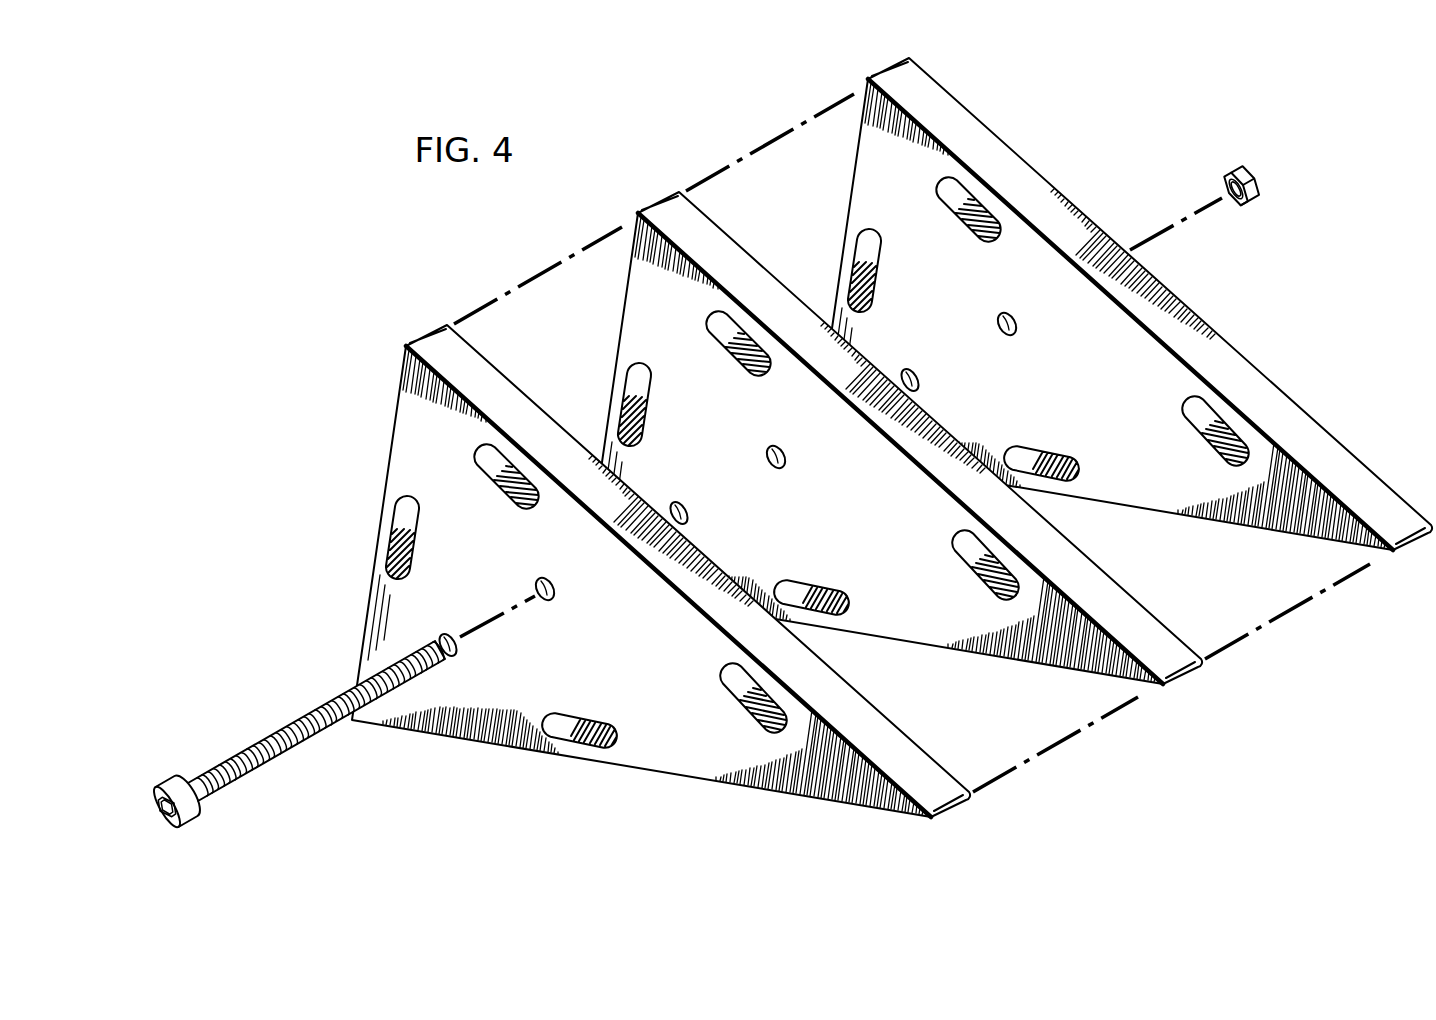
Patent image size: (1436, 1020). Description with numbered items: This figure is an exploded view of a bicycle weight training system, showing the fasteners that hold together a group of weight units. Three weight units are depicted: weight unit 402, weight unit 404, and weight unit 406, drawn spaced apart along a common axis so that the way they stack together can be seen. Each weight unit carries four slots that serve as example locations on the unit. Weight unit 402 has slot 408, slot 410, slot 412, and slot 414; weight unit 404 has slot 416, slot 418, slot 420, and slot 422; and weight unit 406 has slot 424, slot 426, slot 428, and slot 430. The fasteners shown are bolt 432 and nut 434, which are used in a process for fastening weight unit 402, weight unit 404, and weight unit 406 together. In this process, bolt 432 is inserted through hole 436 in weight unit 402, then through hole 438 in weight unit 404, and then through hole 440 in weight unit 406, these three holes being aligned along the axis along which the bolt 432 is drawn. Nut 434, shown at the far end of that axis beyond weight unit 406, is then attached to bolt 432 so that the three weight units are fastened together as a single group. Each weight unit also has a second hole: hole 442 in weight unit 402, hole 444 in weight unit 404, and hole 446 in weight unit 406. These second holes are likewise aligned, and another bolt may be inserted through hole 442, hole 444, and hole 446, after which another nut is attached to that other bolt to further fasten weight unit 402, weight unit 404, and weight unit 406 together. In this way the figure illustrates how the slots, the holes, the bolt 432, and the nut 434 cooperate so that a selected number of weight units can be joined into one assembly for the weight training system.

The weight unit 402 is at (429, 339).
The weight unit 404 is at (655, 205).
The weight unit 406 is at (884, 72).
The slot 408 is at (476, 450).
The slot 410 is at (722, 670).
The slot 412 is at (389, 515).
The slot 414 is at (619, 735).
The slot 416 is at (707, 318).
The slot 418 is at (952, 540).
The slot 420 is at (628, 385).
The slot 422 is at (855, 600).
The slot 424 is at (935, 184).
The slot 426 is at (1185, 405).
The slot 428 is at (862, 250).
The slot 430 is at (1082, 465).
The bolt 432 is at (277, 732).
The nut 434 is at (1248, 165).
The hole 436 is at (445, 631).
The hole 438 is at (676, 500).
The hole 440 is at (908, 367).
The hole 442 is at (545, 577).
The hole 444 is at (774, 444).
The hole 446 is at (1006, 311).